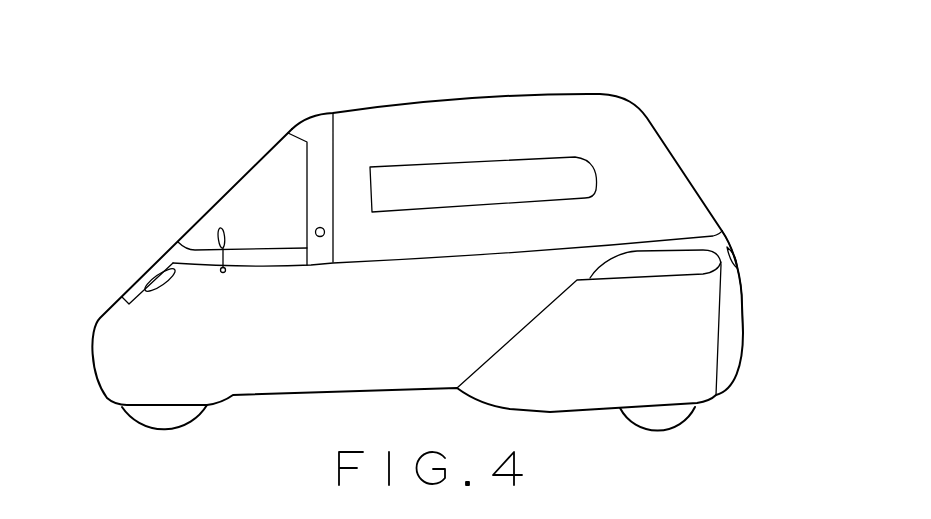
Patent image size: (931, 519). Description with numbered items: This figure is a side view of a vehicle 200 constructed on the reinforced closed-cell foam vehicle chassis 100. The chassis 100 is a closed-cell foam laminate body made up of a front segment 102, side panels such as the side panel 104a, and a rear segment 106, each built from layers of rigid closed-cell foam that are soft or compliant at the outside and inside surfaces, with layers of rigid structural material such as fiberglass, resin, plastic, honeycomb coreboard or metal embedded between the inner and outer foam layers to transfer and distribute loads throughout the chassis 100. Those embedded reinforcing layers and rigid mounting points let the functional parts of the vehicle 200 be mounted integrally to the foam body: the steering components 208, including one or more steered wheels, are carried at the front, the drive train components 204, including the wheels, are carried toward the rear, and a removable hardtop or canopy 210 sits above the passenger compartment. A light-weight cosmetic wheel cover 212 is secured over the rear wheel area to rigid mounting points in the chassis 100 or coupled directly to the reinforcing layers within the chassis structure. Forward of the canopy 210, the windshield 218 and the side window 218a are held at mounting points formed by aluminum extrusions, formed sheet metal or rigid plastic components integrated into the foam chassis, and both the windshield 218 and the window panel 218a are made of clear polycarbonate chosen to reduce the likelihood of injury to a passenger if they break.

The vehicle 200 is at (470, 75).
The vehicle chassis 100 is at (341, 331).
The front segment 102 is at (132, 332).
The side panel 104a is at (492, 321).
The rear segment 106 is at (728, 307).
The steering components 208 is at (175, 418).
The drive train components 204 is at (672, 418).
The canopy 210 is at (641, 174).
The wheel cover 212 is at (668, 347).
The windshield 218 is at (255, 195).
The window 218a is at (542, 169).